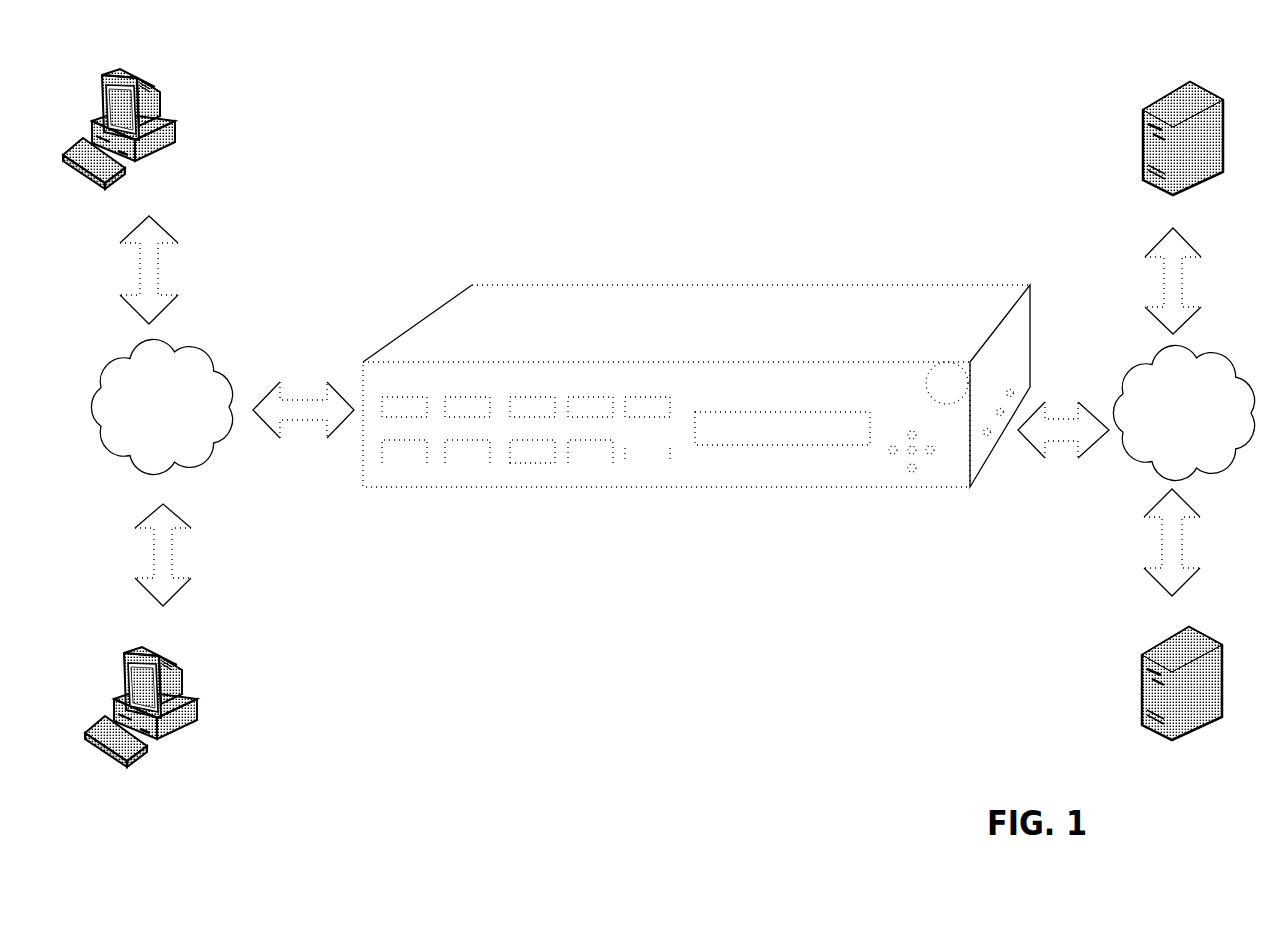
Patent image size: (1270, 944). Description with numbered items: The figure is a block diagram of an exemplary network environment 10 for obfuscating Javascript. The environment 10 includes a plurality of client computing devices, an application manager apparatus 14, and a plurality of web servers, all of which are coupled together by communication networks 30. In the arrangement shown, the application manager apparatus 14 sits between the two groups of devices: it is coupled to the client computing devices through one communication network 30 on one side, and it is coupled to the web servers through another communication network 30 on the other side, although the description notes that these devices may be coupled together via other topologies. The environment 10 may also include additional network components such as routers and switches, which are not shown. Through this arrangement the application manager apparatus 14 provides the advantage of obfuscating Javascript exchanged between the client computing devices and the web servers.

The network environment 10 is at (466, 207).
The application manager apparatus 14 is at (920, 285).
The communication network 30 is at (672, 409).